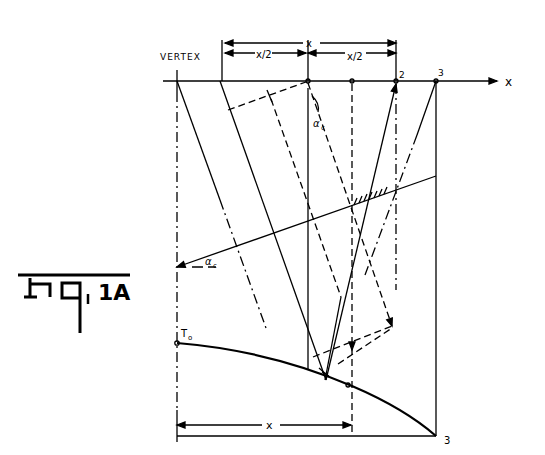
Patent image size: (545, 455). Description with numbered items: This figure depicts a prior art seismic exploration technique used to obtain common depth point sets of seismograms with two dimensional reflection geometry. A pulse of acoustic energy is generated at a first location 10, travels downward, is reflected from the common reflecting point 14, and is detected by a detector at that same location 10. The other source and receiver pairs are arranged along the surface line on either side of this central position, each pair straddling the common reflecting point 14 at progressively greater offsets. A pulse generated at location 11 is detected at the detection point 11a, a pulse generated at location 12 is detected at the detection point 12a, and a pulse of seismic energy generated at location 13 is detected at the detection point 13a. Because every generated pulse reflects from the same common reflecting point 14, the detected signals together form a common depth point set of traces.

The pulse generation and detection point 10 is at (304, 78).
The pulse generation point 11 is at (256, 78).
The detection point 11a is at (352, 78).
The pulse generation point 12 is at (217, 79).
The detection point 12a is at (398, 78).
The pulse generation point 13 is at (177, 74).
The detection point 13a is at (441, 73).
The common reflecting point 14 is at (353, 207).